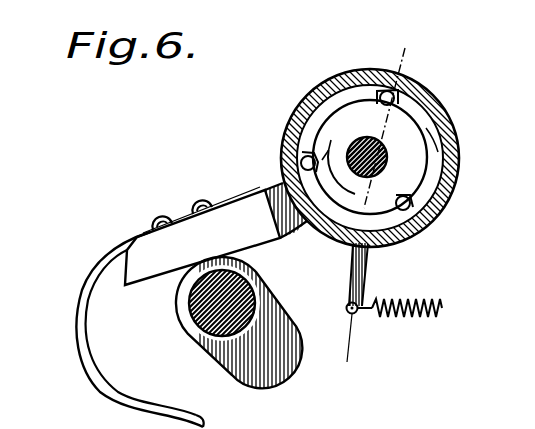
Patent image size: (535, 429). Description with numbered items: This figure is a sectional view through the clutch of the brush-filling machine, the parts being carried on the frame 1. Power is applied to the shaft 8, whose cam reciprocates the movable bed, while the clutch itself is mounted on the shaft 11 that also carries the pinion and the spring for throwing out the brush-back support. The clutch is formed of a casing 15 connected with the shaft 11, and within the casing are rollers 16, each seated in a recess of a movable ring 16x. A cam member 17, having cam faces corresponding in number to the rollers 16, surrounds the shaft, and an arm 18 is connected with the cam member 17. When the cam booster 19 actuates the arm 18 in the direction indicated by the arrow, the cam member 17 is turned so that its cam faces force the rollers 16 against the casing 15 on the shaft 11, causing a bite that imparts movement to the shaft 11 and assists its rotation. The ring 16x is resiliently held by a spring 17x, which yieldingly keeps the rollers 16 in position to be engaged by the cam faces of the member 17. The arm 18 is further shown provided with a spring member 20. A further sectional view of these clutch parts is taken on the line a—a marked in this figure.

The frame 1 is at (137, 228).
The shaft 8 is at (214, 305).
The shaft 11 is at (387, 157).
The casing 15 is at (426, 101).
The rollers 16 is at (302, 162).
The movable ring 16x is at (430, 141).
The cam member 17 is at (370, 157).
The spring 17x is at (382, 303).
The arm 18 is at (216, 231).
The cam booster 19 is at (284, 373).
The band strap 20 is at (158, 403).
The section line a— a is at (377, 205).